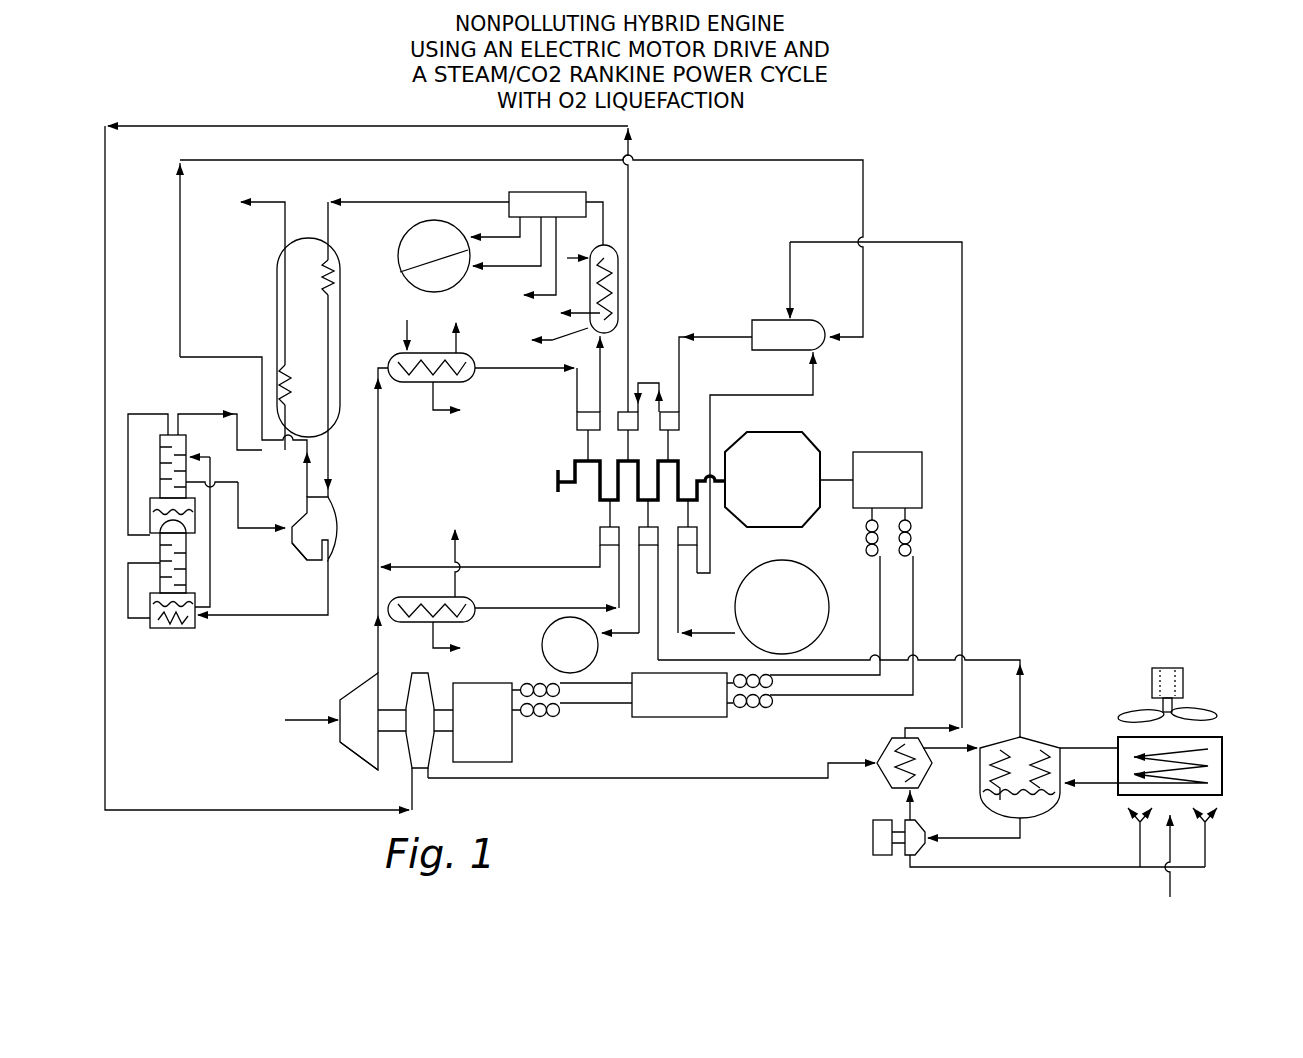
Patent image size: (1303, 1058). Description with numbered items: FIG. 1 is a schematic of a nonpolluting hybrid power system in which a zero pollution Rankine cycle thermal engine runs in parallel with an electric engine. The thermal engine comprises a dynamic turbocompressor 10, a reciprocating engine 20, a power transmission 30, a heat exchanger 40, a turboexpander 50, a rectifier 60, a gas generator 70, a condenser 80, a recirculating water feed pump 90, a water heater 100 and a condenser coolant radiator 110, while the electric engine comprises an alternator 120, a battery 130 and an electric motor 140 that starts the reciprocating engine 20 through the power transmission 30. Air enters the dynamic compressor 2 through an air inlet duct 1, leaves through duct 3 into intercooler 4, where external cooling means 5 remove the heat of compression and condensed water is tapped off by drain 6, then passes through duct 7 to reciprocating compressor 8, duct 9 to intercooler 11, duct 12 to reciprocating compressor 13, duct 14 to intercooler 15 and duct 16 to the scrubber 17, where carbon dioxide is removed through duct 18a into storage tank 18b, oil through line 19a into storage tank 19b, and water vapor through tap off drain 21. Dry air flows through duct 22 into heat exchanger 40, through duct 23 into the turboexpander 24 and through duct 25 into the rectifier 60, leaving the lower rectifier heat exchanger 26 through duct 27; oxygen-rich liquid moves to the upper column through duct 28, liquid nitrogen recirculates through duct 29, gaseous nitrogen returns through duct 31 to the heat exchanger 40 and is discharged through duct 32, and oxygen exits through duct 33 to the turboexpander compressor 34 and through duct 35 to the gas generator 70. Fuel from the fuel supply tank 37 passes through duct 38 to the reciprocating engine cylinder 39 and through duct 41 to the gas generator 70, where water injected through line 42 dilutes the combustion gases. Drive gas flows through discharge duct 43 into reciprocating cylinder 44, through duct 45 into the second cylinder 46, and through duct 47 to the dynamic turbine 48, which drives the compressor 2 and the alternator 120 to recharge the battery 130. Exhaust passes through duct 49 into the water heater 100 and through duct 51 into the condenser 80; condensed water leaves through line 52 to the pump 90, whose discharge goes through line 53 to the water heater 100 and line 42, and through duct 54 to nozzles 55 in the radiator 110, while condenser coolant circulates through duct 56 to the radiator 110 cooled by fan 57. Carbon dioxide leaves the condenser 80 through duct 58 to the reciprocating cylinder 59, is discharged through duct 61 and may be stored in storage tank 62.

The air inlet duct 1 is at (318, 718).
The dynamic compressor 2 is at (355, 755).
The duct 3 is at (375, 640).
The intercooler 4 is at (468, 620).
The external cooling means 5 is at (404, 338).
The drain 6 is at (440, 412).
The duct 7 is at (530, 606).
The reciprocating compressor 8 is at (605, 527).
The duct 9 is at (381, 484).
The dynamic turbocompressor 10 is at (352, 672).
The intercooler 11 is at (444, 346).
The duct 12 is at (528, 370).
The reciprocating compressor 13 is at (577, 420).
The duct 14 is at (598, 370).
The intercooler 15 is at (594, 250).
The duct 16 is at (598, 200).
The scrubber 17 is at (535, 192).
The duct 18a is at (508, 237).
The storage tank 18b is at (399, 250).
The line 19a is at (526, 266).
The storage tank 19b is at (440, 290).
The reciprocating engine 20 is at (548, 472).
The tap off drain 21 is at (545, 294).
The duct 22 is at (445, 202).
The duct 23 is at (330, 470).
The turboexpander 24 is at (337, 524).
The duct 25 is at (235, 616).
The lower rectifier heat exchanger 26 is at (184, 630).
The duct 27 is at (158, 562).
The duct 28 is at (212, 562).
The duct 29 is at (130, 414).
The power transmission 30 is at (800, 427).
The duct 31 is at (195, 412).
The duct 32 is at (264, 200).
The duct 33 is at (212, 480).
The turboexpander compressor 34 is at (290, 520).
The duct 35 is at (300, 492).
The fuel supply tank 37 is at (795, 567).
The duct 38 is at (683, 628).
The reciprocating engine cylinder 39 is at (690, 527).
The heat exchanger 40 is at (262, 293).
The duct 41 is at (742, 396).
The line 42 is at (964, 340).
The discharge duct 43 is at (735, 334).
The reciprocating cylinder 44 is at (680, 412).
The duct 45 is at (637, 398).
The second cylinder 46 is at (628, 432).
The duct 47 is at (630, 235).
The dynamic turbine 48 is at (410, 752).
The duct 49 is at (633, 780).
The turboexpander 50 is at (295, 566).
The duct 51 is at (958, 746).
The line 52 is at (940, 845).
The line 53 is at (912, 820).
The duct 54 is at (1042, 866).
The nozzles 55 is at (1210, 822).
The duct 56 is at (1072, 745).
The fan 57 is at (1166, 668).
The duct 58 is at (1000, 658).
The reciprocating cylinder 59 is at (650, 514).
The rectifier 60 is at (166, 650).
The duct 61 is at (612, 636).
The storage tank 62 is at (545, 650).
The gas generator 70 is at (776, 312).
The condenser 80 is at (1044, 722).
The recirculating water feed pump 90 is at (870, 858).
The water heater 100 is at (870, 772).
The condenser coolant radiator 110 is at (1230, 755).
The alternator 120 is at (528, 742).
The battery 130 is at (684, 730).
The electric motor 140 is at (870, 448).